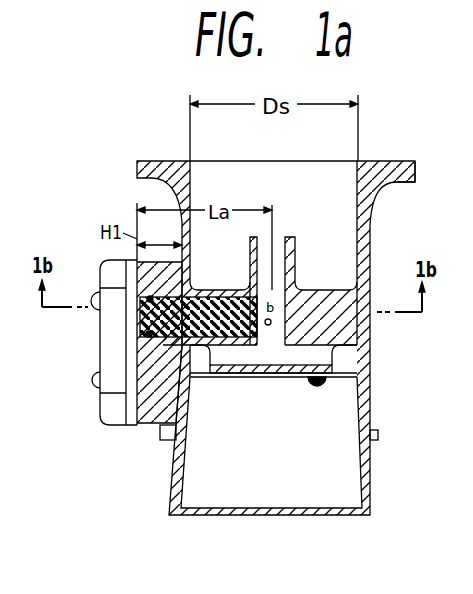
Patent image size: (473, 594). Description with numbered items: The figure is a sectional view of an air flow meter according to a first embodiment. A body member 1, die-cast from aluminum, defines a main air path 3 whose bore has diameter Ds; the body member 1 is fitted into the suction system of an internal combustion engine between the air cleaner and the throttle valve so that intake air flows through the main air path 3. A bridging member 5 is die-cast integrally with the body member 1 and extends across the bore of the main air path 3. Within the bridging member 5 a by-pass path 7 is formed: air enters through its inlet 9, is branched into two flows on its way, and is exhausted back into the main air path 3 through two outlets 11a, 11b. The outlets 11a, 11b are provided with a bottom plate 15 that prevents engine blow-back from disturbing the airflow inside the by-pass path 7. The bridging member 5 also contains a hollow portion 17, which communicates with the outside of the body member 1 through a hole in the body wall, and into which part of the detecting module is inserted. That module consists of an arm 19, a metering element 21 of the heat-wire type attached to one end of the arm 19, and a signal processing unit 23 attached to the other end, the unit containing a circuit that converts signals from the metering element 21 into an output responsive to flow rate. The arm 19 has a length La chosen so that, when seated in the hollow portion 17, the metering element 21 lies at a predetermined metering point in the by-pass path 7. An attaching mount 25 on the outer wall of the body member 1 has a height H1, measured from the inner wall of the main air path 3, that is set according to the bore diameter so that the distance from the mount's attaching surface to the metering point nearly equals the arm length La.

The body member 1 is at (407, 163).
The main air path 3 is at (307, 170).
The bridging member 5 is at (332, 292).
The by-pass path 7 is at (296, 288).
The inlet 9 is at (287, 238).
The outlet 11a is at (202, 367).
The outlet 11b is at (342, 368).
The bottom plate 15 is at (250, 377).
The hollow portion 17 is at (222, 300).
The arm 19 is at (148, 328).
The metering element 21 is at (270, 325).
The signal processing unit 23 is at (100, 407).
The attaching mount 25 is at (158, 428).